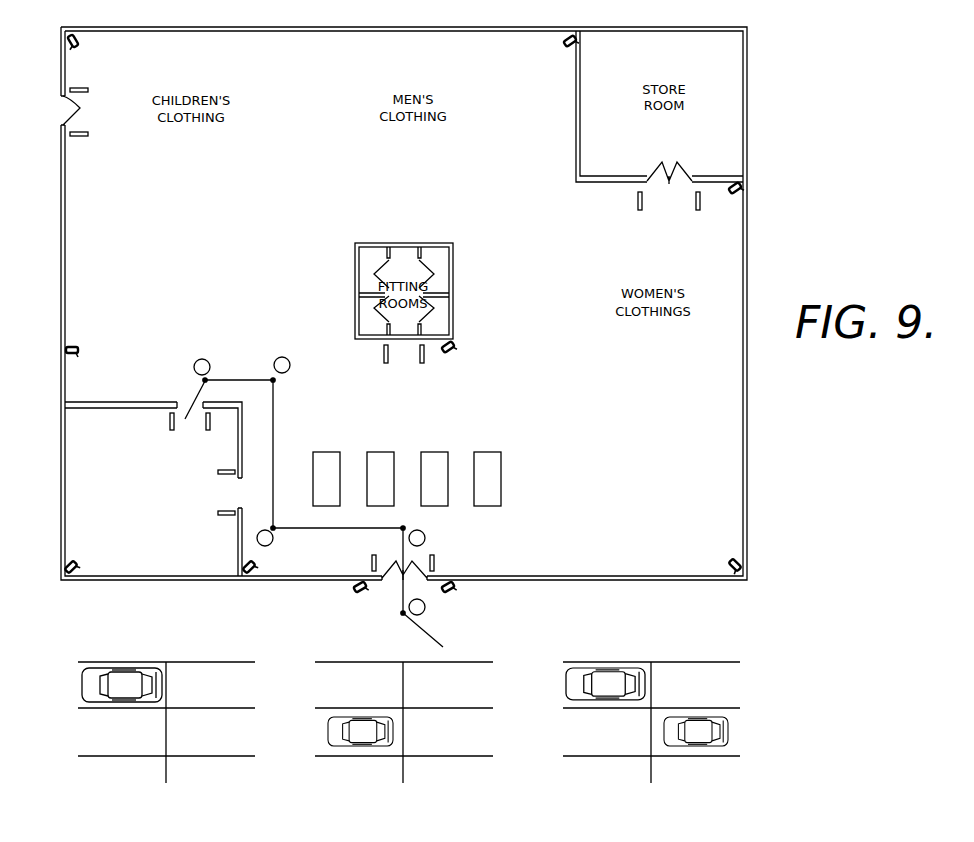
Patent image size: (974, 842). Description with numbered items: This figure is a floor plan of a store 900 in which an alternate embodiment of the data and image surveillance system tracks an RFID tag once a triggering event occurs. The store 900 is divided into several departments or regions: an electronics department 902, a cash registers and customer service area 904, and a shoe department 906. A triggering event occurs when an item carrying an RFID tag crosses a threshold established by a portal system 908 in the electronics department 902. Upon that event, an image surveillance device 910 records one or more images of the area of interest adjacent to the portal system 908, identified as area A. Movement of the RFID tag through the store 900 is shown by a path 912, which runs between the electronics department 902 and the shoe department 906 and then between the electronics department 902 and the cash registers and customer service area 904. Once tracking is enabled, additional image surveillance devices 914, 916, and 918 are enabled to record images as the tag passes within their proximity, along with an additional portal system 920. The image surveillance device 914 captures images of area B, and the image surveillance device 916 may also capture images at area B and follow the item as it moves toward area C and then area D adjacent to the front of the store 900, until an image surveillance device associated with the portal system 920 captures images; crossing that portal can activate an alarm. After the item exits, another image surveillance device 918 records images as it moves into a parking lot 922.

The store 900 is at (810, 162).
The electronics department 902 is at (110, 443).
The cash registers and customer service area 904 is at (423, 440).
The shoe department 906 is at (223, 254).
The portal system 908 is at (205, 428).
The image surveillance device 910 is at (74, 345).
The path 912 is at (227, 379).
The image surveillance device 914 is at (451, 352).
The image surveillance device 916 is at (251, 572).
The image surveillance device 918 is at (362, 591).
The portal system 920 is at (436, 561).
The parking lot 922 is at (308, 655).